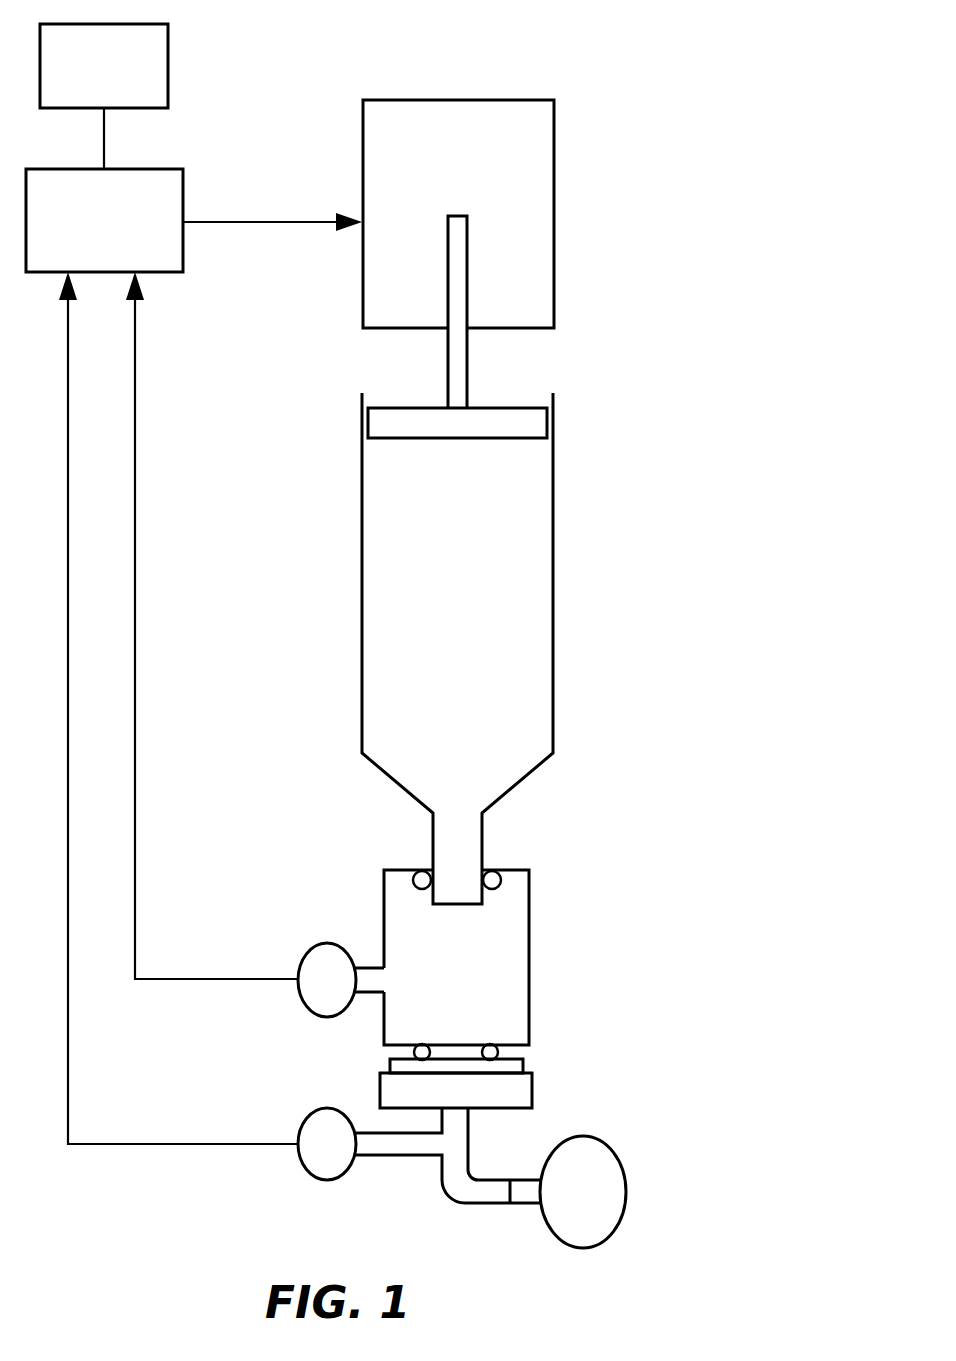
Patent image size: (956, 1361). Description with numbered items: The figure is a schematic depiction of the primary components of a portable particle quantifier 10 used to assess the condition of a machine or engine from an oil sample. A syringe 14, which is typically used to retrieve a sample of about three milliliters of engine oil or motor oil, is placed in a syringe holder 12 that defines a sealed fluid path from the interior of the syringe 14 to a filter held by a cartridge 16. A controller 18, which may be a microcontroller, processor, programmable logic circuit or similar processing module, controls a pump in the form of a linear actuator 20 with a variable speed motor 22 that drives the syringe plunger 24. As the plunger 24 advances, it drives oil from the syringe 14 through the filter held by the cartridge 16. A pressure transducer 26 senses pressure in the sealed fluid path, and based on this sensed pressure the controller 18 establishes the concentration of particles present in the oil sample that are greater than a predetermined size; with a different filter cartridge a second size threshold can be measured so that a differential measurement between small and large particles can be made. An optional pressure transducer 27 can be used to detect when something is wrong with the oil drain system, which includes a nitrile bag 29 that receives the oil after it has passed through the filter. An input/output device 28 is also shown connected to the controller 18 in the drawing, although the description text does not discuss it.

The portable particle quantifier 10 is at (663, 118).
The syringe holder 12 is at (530, 922).
The syringe 14 is at (375, 545).
The cartridge 16 is at (520, 1062).
The controller 18 is at (88, 256).
The linear actuator 20 is at (302, 96).
The variable speed motor 22 is at (441, 194).
The syringe plunger 24 is at (455, 362).
The pressure transducer 26 is at (316, 955).
The optional pressure transducer 27 is at (316, 1117).
The input/output device 28 is at (88, 98).
The nitrile bag 29 is at (603, 1160).